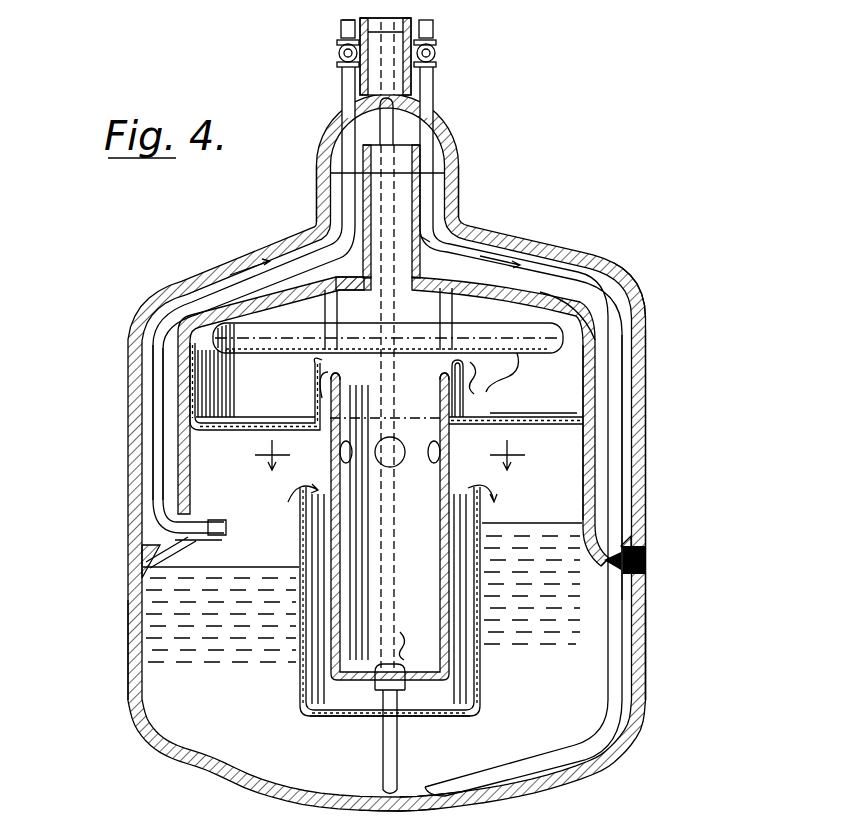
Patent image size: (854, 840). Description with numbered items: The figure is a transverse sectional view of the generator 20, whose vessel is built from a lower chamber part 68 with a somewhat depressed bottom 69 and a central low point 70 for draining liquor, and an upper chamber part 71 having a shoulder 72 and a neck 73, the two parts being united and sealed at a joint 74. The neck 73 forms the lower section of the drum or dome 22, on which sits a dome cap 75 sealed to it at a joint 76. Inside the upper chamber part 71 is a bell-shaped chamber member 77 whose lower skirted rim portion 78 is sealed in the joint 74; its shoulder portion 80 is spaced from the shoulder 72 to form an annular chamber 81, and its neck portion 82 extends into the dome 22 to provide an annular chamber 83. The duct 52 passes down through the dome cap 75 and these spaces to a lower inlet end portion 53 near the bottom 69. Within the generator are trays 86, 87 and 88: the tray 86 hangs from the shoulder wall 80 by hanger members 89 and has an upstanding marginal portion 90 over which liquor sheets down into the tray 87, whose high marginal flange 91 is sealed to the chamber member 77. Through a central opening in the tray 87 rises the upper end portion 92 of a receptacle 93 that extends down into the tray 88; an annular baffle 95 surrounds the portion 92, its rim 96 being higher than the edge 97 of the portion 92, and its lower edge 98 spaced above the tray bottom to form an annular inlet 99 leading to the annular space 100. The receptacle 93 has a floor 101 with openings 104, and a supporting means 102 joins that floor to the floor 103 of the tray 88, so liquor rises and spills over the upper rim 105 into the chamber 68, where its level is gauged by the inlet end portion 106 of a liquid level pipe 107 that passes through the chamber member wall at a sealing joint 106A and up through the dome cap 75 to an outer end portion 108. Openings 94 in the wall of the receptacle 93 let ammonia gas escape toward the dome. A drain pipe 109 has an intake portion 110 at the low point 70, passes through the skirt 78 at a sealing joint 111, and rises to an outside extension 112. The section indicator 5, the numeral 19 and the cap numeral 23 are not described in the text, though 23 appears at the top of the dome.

The generator 20 is at (657, 437).
The drum or dome 22 is at (468, 156).
The cap 23 is at (412, 30).
The duct 52 is at (396, 108).
The lower inlet end portion 53 is at (388, 795).
The lower chamber part 68 is at (129, 663).
The depressed bottom 69 is at (506, 798).
The central low point 70 is at (392, 811).
The upper chamber part 71 is at (648, 357).
The shoulder 72 is at (616, 282).
The neck 73 is at (421, 202).
The joint 74 is at (634, 560).
The dome cap 75 is at (344, 108).
The joint 76 is at (455, 178).
The bell-shaped chamber member 77 is at (214, 468).
The lower skirted rim portion 78 is at (140, 554).
The shoulder portion 80 is at (586, 262).
The annular chamber 81 is at (198, 270).
The neck portion 82 is at (432, 224).
The annular chamber 83 is at (315, 160).
The tray 86 is at (500, 366).
The tray 87 is at (548, 426).
The tray or receptacle 88 is at (300, 650).
The hanger members 89 is at (326, 302).
The upstanding marginal portion 90 is at (244, 335).
The high marginal wall or flange 91 is at (196, 396).
The upper end portion 92 is at (446, 396).
The receptacle or tray 93 is at (331, 600).
The openings 94 is at (350, 462).
The annular wall or baffle 95 is at (330, 392).
The upper end or rim 96 is at (318, 380).
The upper end or edge 97 is at (464, 384).
The lower end or edge 98 is at (466, 407).
The annular entry or inlet 99 is at (316, 414).
The annular space 100 is at (496, 386).
The lower wall or floor 101 is at (402, 698).
The supporting means 102 is at (385, 756).
The bottom wall or floor 103 is at (350, 720).
The openings 104 is at (416, 644).
The upper rim 105 is at (292, 490).
The inlet end portion 106 is at (218, 520).
The sealing connection or joint 106A is at (172, 536).
The liquid level pipe or duct 107 is at (160, 452).
The outer end portion 108 is at (340, 30).
The liquor drain pipe or duct 109 is at (620, 607).
The intake portion 110 is at (446, 790).
The sealing joint or connection 111 is at (606, 574).
The outside extension 112 is at (434, 92).
The gap 19 is at (150, 505).
The section line 5 is at (389, 448).